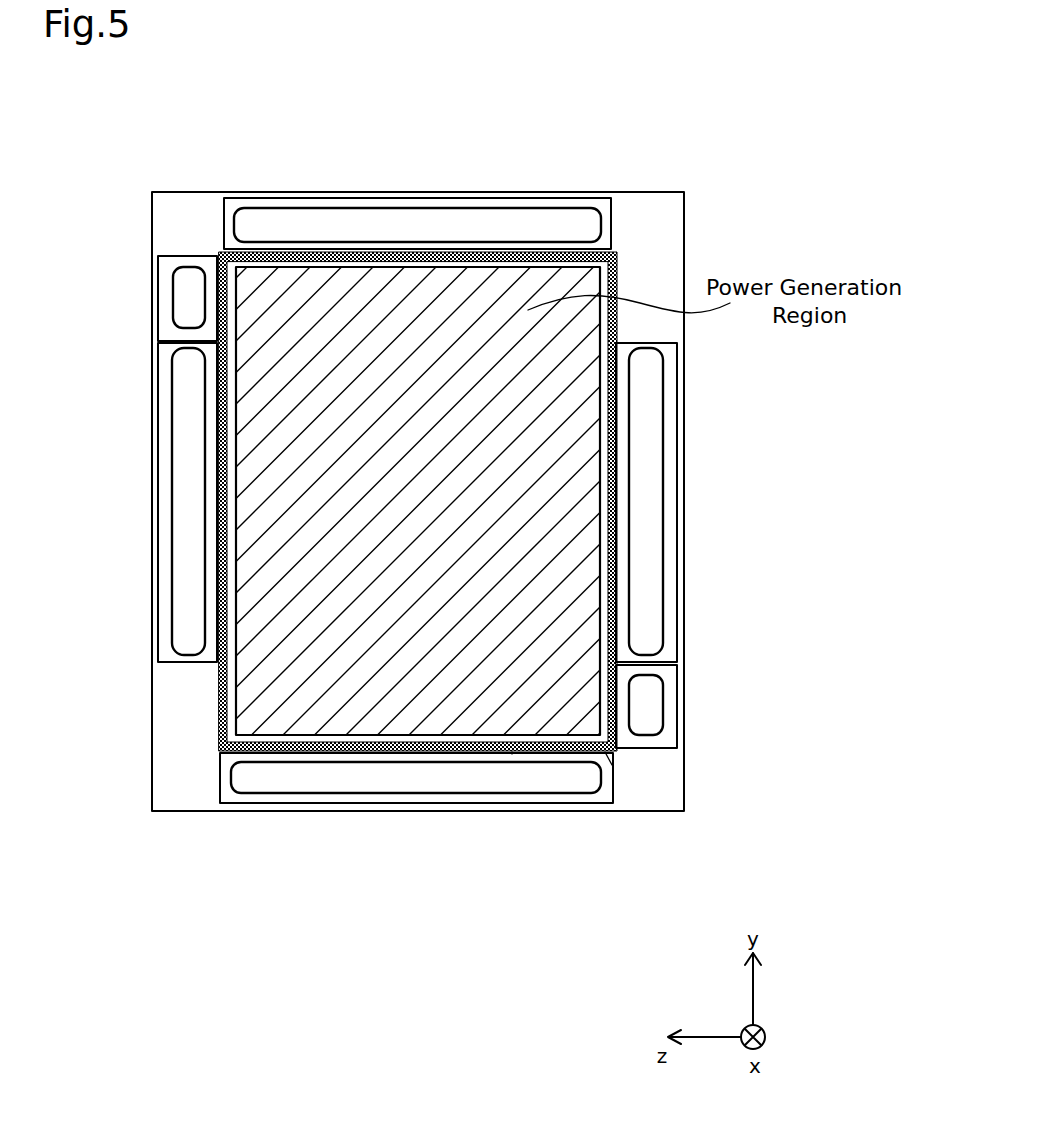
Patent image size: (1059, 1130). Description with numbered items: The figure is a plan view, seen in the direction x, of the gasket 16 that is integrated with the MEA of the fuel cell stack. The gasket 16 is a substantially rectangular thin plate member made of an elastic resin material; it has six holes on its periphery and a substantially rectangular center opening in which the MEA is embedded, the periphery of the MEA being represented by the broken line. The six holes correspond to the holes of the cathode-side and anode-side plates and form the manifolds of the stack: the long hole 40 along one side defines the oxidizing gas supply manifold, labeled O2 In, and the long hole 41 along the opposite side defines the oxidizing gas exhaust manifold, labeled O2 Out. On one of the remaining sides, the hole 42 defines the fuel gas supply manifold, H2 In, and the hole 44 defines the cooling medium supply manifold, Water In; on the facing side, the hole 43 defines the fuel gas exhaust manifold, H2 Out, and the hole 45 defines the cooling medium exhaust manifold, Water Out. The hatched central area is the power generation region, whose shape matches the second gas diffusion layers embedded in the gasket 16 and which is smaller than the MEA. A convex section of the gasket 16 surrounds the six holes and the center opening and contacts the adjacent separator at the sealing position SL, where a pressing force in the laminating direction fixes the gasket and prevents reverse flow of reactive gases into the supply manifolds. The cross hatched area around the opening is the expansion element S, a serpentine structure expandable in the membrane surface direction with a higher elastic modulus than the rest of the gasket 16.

The gasket 16 is at (648, 152).
The long hole 40 is at (271, 217).
The long hole 41 is at (283, 783).
The hole 42 is at (185, 277).
The hole 43 is at (653, 673).
The hole 44 is at (185, 400).
The hole 45 is at (650, 388).
The sealing position SL is at (216, 723).
The element MEA is at (612, 765).
The expansion element S is at (512, 753).